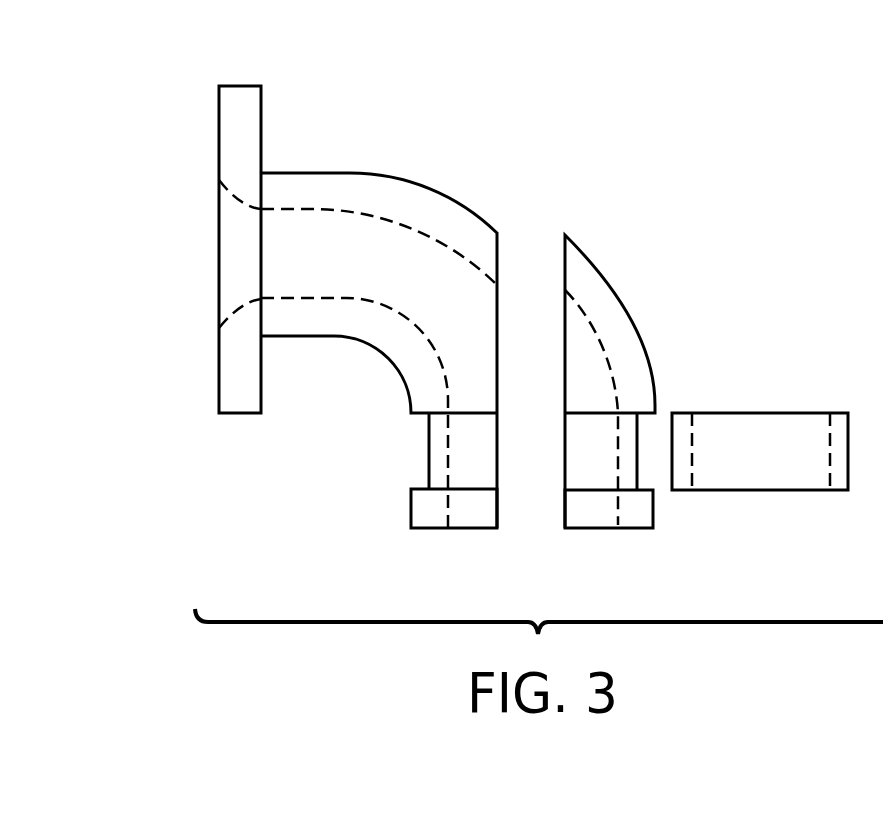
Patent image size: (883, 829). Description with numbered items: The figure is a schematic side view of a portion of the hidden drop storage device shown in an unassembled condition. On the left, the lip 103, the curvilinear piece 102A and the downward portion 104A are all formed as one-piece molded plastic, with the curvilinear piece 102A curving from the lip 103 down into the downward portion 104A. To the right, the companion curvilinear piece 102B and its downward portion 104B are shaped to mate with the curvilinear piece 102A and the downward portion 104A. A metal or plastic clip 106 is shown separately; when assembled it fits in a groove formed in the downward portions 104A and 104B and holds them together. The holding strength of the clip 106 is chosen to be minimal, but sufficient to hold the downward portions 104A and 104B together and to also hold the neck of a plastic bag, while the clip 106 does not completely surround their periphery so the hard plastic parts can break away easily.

The curvilinear piece 102A is at (415, 183).
The companion curvilinear piece 102B is at (628, 307).
The lip 103 is at (237, 415).
The downward portion 104A is at (429, 433).
The downward portion 104B is at (559, 453).
The clip 106 is at (797, 490).